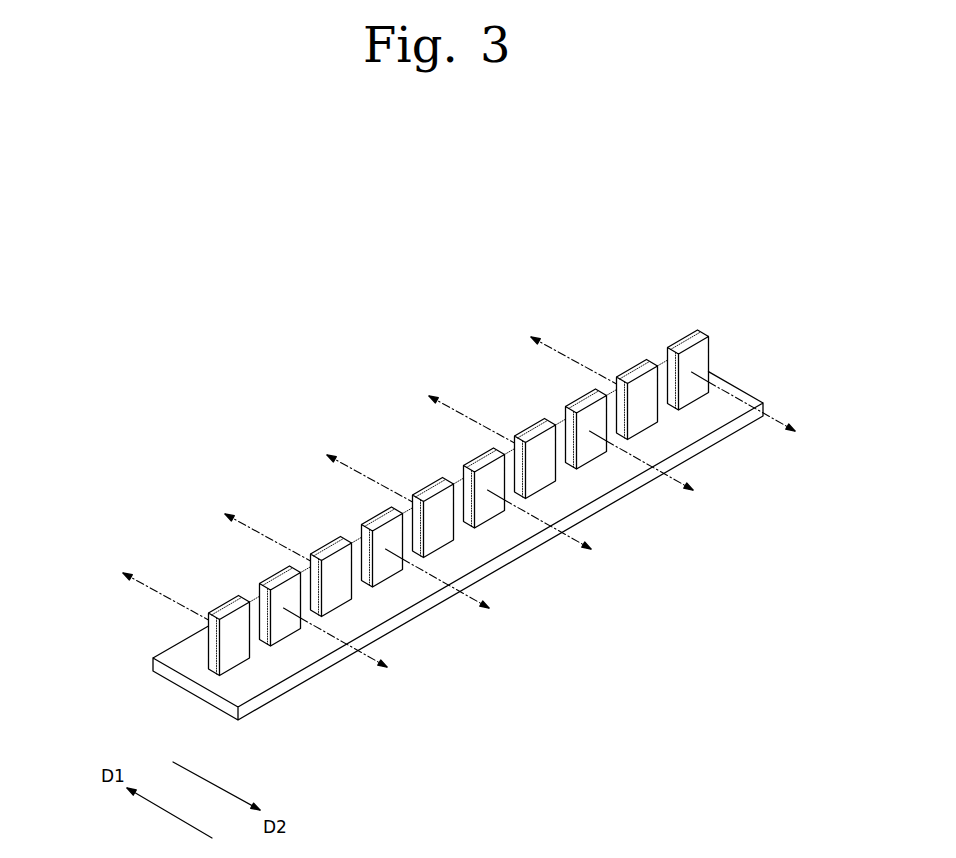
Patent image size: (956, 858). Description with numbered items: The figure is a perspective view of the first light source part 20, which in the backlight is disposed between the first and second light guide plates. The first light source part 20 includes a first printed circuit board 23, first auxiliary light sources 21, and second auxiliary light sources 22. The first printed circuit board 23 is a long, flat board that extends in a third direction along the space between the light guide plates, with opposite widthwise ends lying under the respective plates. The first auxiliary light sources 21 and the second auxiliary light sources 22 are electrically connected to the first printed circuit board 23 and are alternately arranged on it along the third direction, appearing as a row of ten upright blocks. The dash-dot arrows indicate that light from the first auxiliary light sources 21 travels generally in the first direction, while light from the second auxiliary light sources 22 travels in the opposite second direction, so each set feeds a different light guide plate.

The first light source part 20 is at (453, 473).
The first auxiliary light sources 21 is at (237, 603).
The second auxiliary light sources 22 is at (287, 573).
The first printed circuit board 23 is at (188, 652).